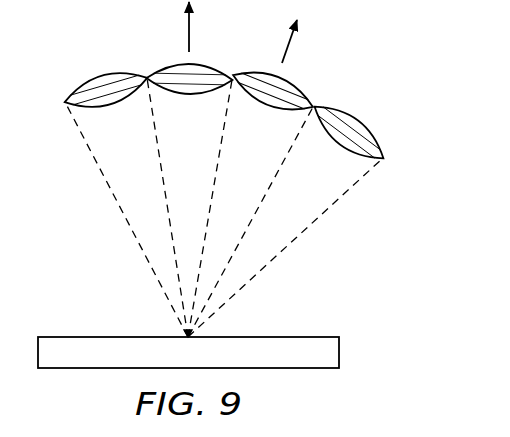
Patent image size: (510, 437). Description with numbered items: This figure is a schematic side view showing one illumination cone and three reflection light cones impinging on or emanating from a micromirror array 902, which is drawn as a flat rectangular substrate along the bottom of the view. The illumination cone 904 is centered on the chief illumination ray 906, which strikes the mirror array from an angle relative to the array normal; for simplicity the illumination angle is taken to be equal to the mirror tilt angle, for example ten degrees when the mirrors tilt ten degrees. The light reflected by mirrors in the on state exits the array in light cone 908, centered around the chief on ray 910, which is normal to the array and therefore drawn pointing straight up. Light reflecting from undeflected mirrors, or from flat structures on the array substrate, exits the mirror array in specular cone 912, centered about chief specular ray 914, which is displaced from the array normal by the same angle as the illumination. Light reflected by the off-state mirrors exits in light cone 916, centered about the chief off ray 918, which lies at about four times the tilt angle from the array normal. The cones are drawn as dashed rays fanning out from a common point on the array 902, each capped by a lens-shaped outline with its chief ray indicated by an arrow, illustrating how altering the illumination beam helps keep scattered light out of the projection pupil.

The micromirror array 902 is at (100, 336).
The illumination cone 904 is at (93, 158).
The chief illumination ray 906 is at (97, 67).
The on-state light cone 908 is at (167, 65).
The chief on ray 910 is at (190, 23).
The specular cone 912 is at (273, 112).
The chief specular ray 914 is at (280, 57).
The off-state light cone 916 is at (322, 213).
The chief off ray 918 is at (395, 72).